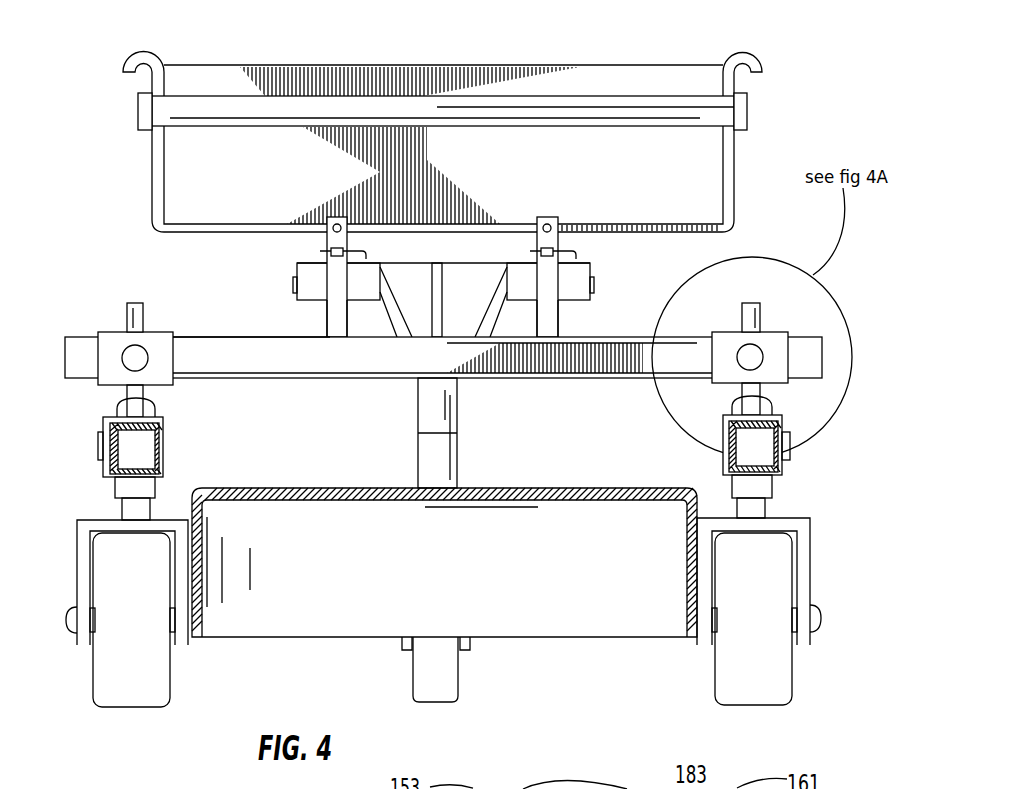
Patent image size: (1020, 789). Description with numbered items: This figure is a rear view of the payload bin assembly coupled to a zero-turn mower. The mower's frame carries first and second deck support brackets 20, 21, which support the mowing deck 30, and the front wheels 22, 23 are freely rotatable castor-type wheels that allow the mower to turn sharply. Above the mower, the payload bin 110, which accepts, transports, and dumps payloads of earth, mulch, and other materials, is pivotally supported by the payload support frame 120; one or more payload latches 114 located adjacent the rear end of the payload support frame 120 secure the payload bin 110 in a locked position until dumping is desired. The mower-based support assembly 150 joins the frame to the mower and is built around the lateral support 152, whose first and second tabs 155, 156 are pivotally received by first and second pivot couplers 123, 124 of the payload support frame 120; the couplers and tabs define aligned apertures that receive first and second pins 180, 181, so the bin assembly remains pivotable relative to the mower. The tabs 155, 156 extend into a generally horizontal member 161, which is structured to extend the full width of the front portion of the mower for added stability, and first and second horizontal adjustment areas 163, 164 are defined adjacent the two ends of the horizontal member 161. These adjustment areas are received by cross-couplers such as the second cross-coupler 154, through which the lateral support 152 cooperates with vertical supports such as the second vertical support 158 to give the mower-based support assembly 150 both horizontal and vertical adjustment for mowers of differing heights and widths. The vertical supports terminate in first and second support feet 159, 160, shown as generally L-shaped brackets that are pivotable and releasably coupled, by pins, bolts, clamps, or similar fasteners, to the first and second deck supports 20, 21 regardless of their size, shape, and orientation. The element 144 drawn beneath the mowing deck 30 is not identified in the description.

The payload bin 110 is at (152, 168).
The payload latch 114 is at (547, 233).
The payload support frame 120 is at (325, 250).
The first pivot coupler 123 is at (580, 265).
The second pivot coupler 124 is at (308, 272).
The first pin 180 is at (592, 287).
The second pin 181 is at (293, 283).
The second tab 156 is at (338, 317).
The first tab 155 is at (560, 330).
The mower-based support assembly 150 is at (795, 92).
The second cross-coupler 154 is at (113, 330).
The second vertical support 158 is at (133, 398).
The second support foot 160 is at (103, 462).
The first deck support bracket 20 is at (780, 467).
The first support foot 159 is at (777, 455).
The second deck support bracket 21 is at (110, 477).
The front wheel 23 is at (138, 680).
The front wheel 22 is at (755, 688).
The lateral support 152 is at (322, 393).
The second horizontal adjustment area 164 is at (248, 338).
The first horizontal adjustment area 163 is at (622, 386).
The horizontal member 161 is at (432, 353).
The mowing deck 30 is at (536, 601).
The mounting tab 144 is at (442, 675).